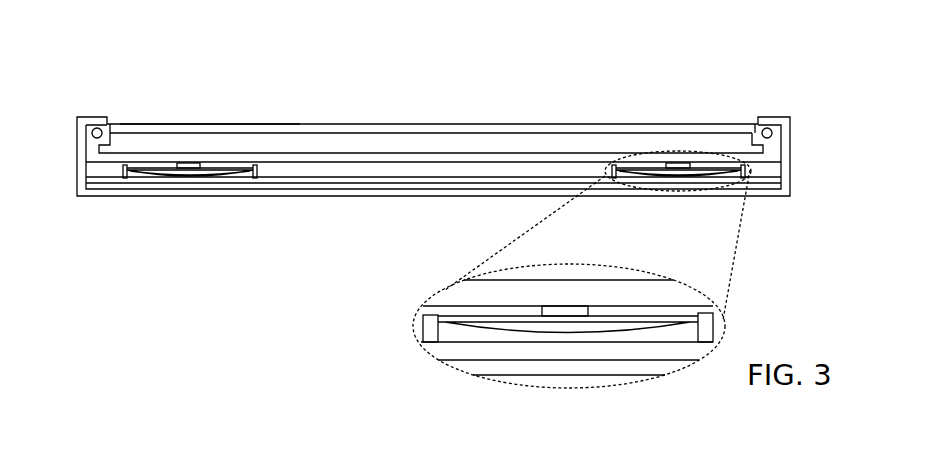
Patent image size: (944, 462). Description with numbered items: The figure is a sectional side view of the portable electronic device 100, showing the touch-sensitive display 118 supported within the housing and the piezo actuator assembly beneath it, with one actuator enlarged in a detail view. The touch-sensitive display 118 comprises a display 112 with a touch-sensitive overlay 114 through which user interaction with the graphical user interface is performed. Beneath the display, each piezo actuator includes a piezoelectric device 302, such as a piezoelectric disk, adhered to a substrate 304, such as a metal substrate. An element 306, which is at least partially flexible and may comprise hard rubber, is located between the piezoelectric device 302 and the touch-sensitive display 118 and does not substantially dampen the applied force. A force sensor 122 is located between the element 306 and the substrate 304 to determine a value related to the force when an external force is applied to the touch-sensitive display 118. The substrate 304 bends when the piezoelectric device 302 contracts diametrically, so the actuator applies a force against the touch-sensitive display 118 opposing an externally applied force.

The portable electronic device 100 is at (629, 89).
The display 112 is at (347, 133).
The touch-sensitive overlay 114 is at (410, 124).
The touch-sensitive display 118 is at (185, 123).
The force sensor 122 is at (620, 318).
The piezoelectric device 302 is at (587, 332).
The substrate 304 is at (428, 314).
The element 306 is at (540, 308).